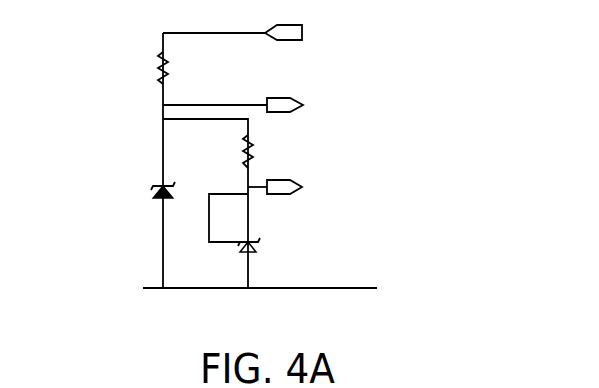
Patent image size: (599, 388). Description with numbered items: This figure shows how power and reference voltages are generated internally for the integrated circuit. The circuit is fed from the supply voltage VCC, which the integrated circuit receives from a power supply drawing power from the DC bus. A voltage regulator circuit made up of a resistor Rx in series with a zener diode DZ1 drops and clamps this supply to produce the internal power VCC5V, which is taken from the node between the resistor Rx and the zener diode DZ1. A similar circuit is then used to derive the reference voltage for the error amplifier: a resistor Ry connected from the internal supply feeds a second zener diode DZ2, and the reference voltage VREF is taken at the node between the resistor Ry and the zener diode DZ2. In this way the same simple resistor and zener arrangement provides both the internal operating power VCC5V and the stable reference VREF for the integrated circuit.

The resistor Rx is at (157, 73).
The resistor Ry is at (255, 160).
The zener diode DZ1 is at (152, 191).
The zener diode DZ2 is at (258, 243).
The power supply voltage VCC is at (310, 34).
The internal power VCC5V is at (327, 106).
The reference voltage VREF is at (307, 188).